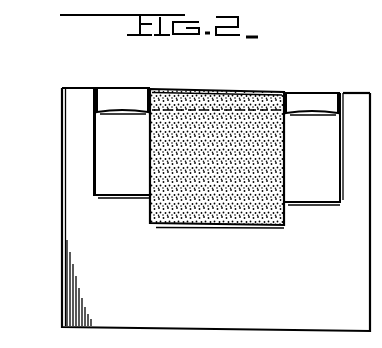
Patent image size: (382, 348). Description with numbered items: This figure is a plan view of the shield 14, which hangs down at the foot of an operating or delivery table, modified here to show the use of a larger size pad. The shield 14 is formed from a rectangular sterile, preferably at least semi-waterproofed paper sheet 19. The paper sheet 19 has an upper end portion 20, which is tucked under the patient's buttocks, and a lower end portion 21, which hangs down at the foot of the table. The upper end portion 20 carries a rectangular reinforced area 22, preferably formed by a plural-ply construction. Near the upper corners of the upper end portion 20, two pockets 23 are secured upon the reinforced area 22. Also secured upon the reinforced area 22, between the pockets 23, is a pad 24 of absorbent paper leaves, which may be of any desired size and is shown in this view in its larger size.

The shield 14 is at (372, 65).
The paper sheet 19 is at (74, 223).
The upper end portion 20 is at (71, 92).
The lower end portion 21 is at (60, 314).
The reinforced area 22 is at (103, 150).
The pockets 23 is at (125, 101).
The pad 24 is at (222, 218).